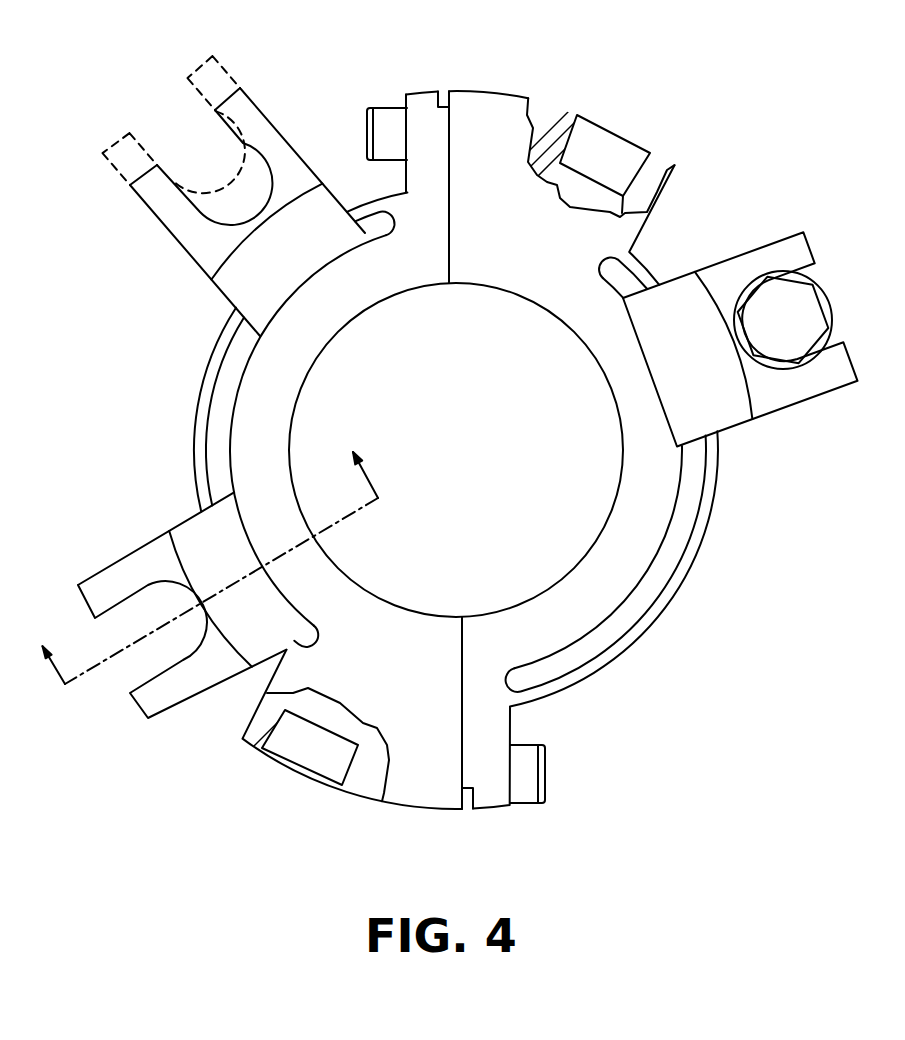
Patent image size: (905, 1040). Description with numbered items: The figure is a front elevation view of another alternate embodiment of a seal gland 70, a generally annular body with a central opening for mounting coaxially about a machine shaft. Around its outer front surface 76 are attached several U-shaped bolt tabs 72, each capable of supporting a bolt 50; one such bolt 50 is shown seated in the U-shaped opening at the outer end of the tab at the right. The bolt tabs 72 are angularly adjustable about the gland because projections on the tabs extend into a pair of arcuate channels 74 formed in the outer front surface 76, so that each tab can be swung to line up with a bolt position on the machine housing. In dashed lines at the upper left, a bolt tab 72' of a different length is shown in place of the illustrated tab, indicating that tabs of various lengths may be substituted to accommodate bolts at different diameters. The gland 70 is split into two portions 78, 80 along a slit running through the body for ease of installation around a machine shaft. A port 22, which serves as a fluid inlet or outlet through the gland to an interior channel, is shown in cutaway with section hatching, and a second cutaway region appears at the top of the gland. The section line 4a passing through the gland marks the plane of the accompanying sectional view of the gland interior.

The seal gland 70 is at (527, 53).
The U-shaped bolt tab 72 is at (468, 394).
The bolt tab of different length 72' is at (189, 103).
The arcuate channel 74 is at (657, 577).
The outer front surface 76 is at (653, 515).
The gland portion 78 is at (432, 97).
The gland portion 80 is at (464, 105).
The bolt 50 is at (800, 298).
The port 22 is at (293, 763).
The section line 4a is at (204, 555).